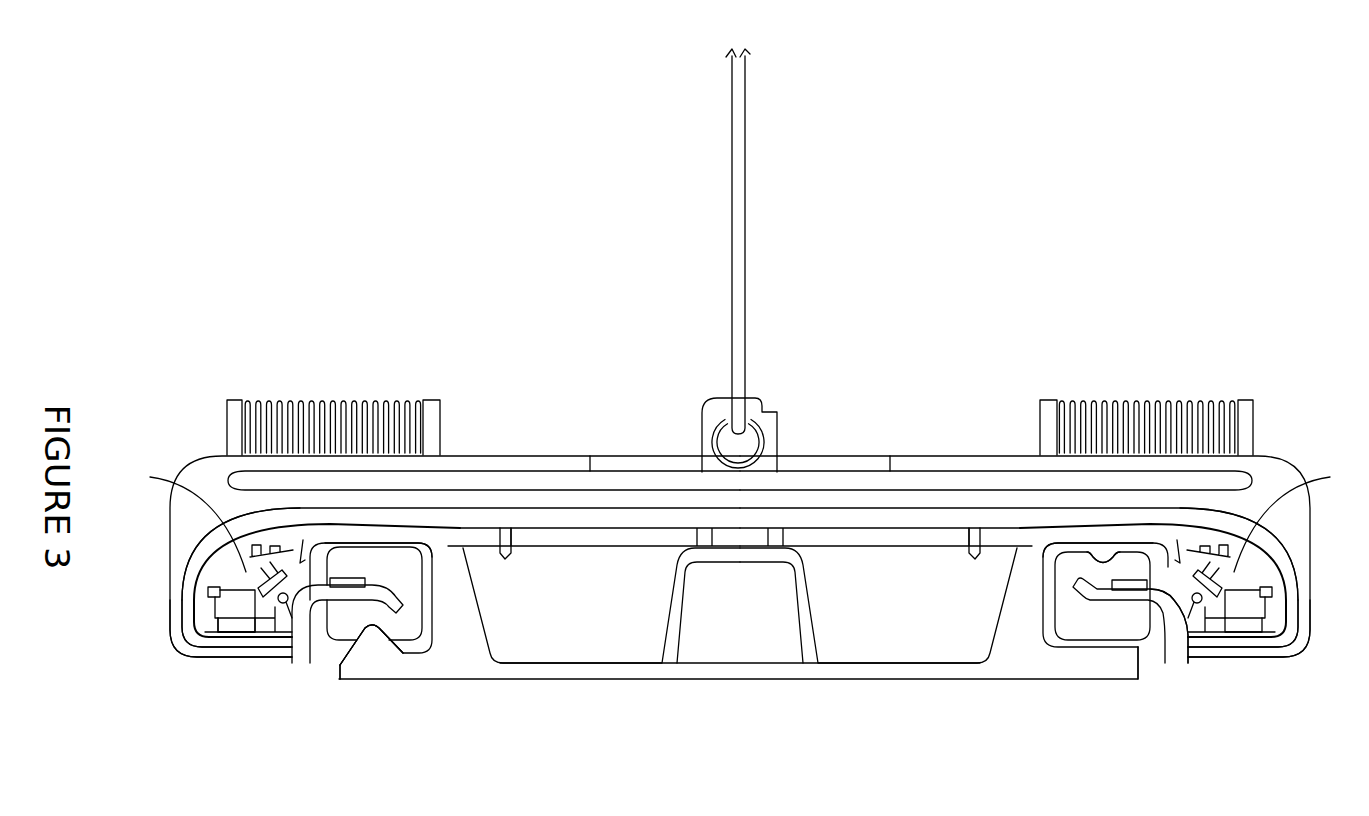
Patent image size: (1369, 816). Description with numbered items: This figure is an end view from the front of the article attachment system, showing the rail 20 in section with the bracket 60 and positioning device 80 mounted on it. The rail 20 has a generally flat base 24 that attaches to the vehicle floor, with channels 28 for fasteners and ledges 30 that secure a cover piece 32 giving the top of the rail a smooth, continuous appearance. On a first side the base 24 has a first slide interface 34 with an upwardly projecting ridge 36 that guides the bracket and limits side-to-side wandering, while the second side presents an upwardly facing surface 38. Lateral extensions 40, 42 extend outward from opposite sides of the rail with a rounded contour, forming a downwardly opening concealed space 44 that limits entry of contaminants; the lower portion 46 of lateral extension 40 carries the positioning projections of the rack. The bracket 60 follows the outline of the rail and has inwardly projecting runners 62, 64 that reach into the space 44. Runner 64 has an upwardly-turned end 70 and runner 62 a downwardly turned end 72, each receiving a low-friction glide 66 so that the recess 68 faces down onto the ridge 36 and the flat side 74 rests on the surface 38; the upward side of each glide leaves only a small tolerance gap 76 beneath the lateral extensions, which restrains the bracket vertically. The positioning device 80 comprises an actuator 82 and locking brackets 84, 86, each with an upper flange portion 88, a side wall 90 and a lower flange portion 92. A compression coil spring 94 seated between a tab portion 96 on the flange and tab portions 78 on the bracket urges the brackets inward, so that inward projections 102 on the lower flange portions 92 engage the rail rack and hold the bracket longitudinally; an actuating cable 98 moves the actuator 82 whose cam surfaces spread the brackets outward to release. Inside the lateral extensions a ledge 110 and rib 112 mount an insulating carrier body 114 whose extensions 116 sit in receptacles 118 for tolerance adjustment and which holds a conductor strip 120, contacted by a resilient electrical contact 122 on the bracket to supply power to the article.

The rail member 20 is at (466, 714).
The base 24 is at (717, 680).
The channels 28 is at (630, 644).
The ledges 30 is at (482, 540).
The cover piece 32 is at (602, 518).
The first slide interface 34 is at (340, 656).
The ridge 36 is at (374, 632).
The upwardly facing surface 38 is at (1066, 655).
The lateral extension 40 is at (246, 565).
The lateral extension 42 is at (1193, 538).
The space 44 is at (1165, 592).
The lower portion 46 is at (240, 640).
The bracket 60 is at (160, 604).
The runner 62 is at (254, 653).
The runner 64 is at (1272, 653).
The glides 66 is at (413, 621).
The recess 68 is at (362, 631).
The upwardly-turned end 70 is at (1082, 598).
The downwardly turned end 72 is at (398, 601).
The flat side 74 is at (380, 543).
The tolerance gap 76 is at (412, 544).
The tab portions 78 is at (234, 398).
The positioning device 80 is at (1287, 463).
The actuator 82 is at (805, 463).
The bracket 84 is at (927, 448).
The bracket 86 is at (527, 452).
The upper flange portion 88 is at (472, 465).
The side wall 90 is at (182, 507).
The lower flange portion 92 is at (195, 620).
The spring 94 is at (326, 400).
The tab portion 96 is at (436, 400).
The actuating cable 98 is at (742, 172).
The inward projections 102 is at (279, 628).
The ledge 110 is at (205, 622).
The rib 112 is at (740, 541).
The carrier body 114 is at (152, 477).
The extensions 116 is at (256, 549).
The receptacles 118 is at (208, 592).
The conductor strip 120 is at (284, 579).
The resilient electrical contact 122 is at (291, 622).